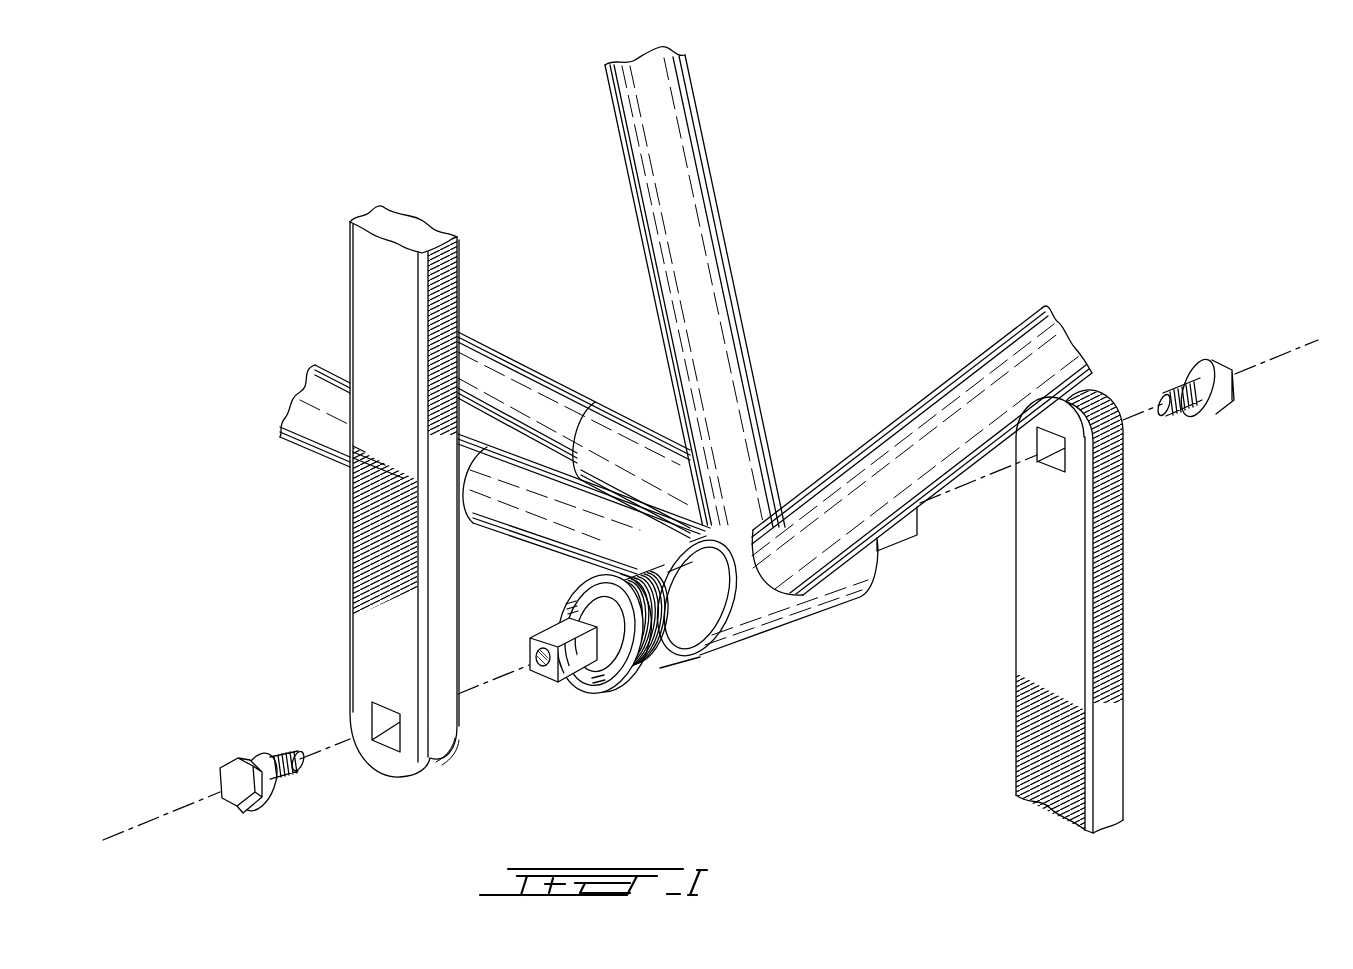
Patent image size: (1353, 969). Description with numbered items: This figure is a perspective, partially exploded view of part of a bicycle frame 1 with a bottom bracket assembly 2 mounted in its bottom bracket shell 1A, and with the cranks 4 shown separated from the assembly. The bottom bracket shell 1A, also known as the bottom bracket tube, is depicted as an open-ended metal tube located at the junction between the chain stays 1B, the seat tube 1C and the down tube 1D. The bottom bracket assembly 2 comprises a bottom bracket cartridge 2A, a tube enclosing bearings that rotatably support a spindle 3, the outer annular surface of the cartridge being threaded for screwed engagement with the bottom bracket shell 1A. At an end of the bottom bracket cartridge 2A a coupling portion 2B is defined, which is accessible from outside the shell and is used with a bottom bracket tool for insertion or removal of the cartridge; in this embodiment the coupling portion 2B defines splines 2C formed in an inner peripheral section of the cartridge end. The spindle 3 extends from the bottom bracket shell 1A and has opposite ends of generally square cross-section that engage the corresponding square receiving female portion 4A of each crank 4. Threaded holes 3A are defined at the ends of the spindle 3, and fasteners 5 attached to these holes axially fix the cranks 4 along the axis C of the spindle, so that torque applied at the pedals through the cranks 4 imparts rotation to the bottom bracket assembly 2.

The bicycle frame 1 is at (682, 218).
The bottom bracket shell 1A is at (810, 605).
The chain stays 1B is at (323, 418).
The seat tube 1C is at (722, 360).
The down tube 1D is at (993, 377).
The bottom bracket assembly 2 is at (588, 698).
The bottom bracket cartridge 2A is at (648, 672).
The coupling portion 2B is at (603, 690).
The splines 2C is at (573, 612).
The spindle 3 is at (538, 709).
The threaded hole 3A is at (543, 665).
The cranks 4 is at (740, 533).
The receiving female portion 4A is at (380, 752).
The fasteners 5 is at (235, 778).
The axis C is at (120, 832).